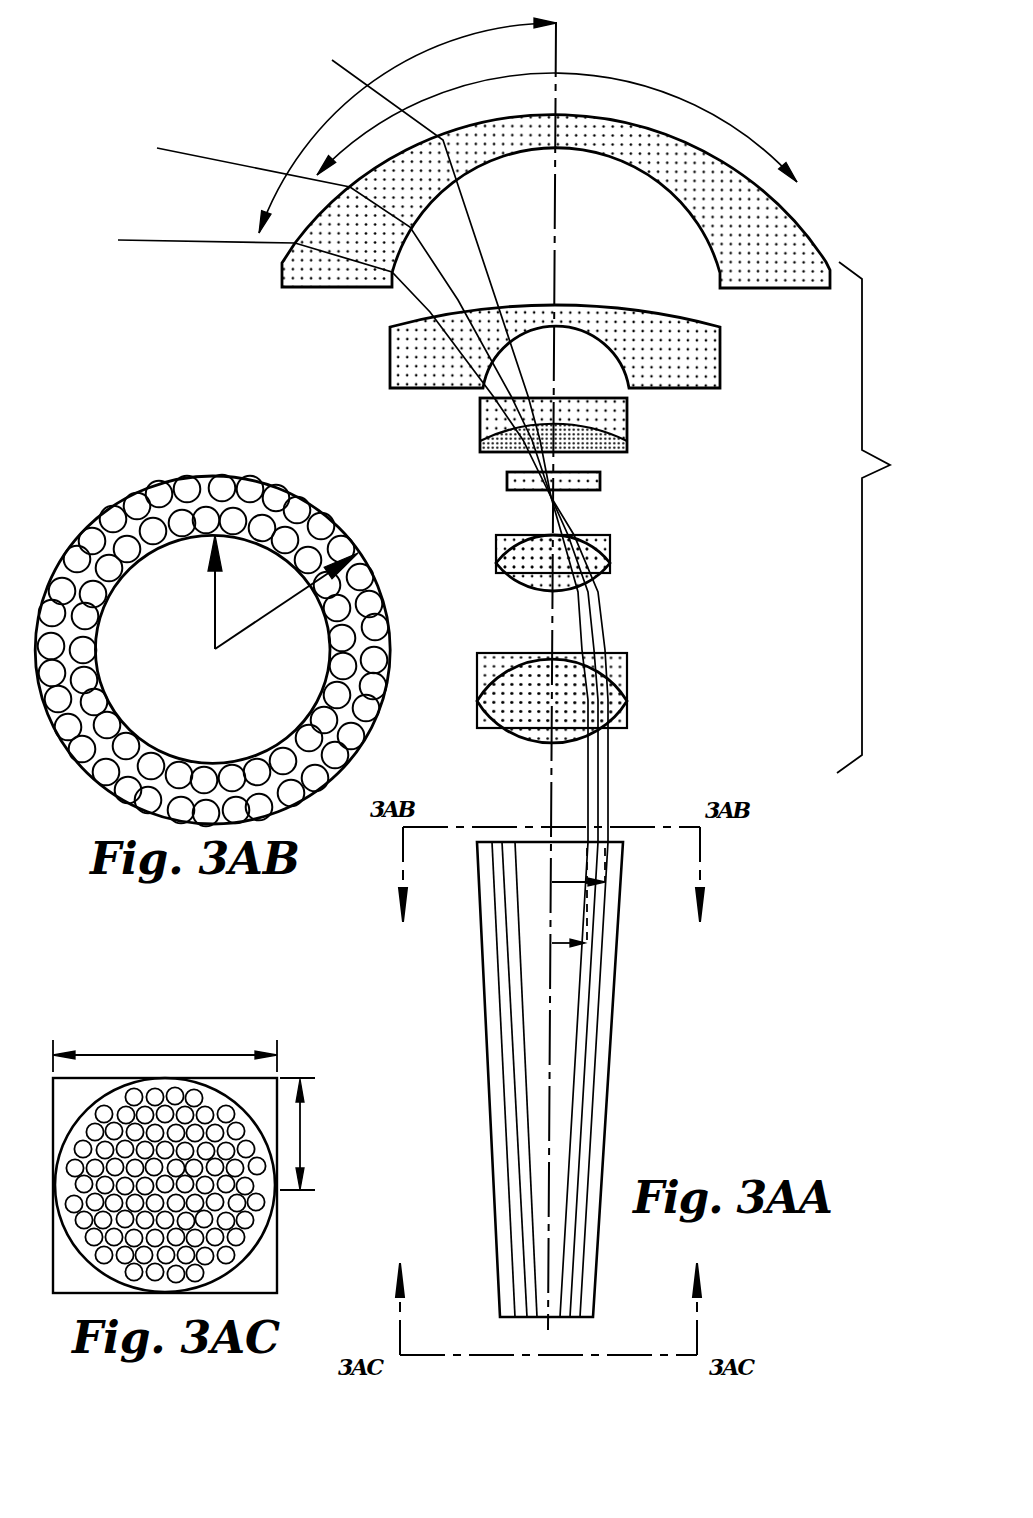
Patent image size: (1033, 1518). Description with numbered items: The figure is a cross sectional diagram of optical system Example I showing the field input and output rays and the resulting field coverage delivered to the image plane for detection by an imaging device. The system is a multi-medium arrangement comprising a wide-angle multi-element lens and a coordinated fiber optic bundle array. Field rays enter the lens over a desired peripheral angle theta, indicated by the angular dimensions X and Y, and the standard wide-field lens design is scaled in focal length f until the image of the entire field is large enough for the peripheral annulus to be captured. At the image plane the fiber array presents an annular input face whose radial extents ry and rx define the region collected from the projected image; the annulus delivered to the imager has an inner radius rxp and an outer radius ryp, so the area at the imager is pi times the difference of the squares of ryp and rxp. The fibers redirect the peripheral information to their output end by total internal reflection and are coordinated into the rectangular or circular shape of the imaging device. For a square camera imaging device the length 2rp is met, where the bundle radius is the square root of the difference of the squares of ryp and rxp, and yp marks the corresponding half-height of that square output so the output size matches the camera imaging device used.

In FIG. 3AA, the desired angle θ theta is at (407, 125).
In FIG. 3AA, the field angle in X direction X is at (557, 113).
In FIG. 3AA, the field angle in Y direction Y is at (334, 352).
In FIG. 3AA, the focal length f is at (881, 517).
In FIG. 3AA, the image radius in y direction ry is at (562, 871).
In FIG. 3AA, the image radius in x direction rx is at (553, 902).
In FIG. 3AB, the inner radius r_x' of the annular fiber input rxp is at (196, 592).
In FIG. 3AB, the outer radius r_y' of the annular fiber input ryp is at (286, 602).
In FIG. 3AC, the imager length 2r' 2rp is at (165, 1049).
In FIG. 3AC, the fiber bundle radius y' yp is at (302, 1134).